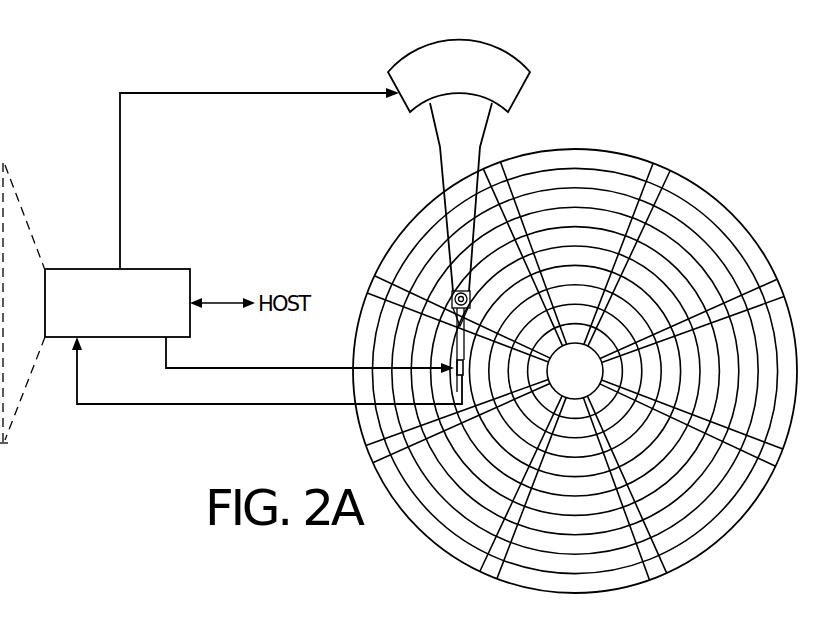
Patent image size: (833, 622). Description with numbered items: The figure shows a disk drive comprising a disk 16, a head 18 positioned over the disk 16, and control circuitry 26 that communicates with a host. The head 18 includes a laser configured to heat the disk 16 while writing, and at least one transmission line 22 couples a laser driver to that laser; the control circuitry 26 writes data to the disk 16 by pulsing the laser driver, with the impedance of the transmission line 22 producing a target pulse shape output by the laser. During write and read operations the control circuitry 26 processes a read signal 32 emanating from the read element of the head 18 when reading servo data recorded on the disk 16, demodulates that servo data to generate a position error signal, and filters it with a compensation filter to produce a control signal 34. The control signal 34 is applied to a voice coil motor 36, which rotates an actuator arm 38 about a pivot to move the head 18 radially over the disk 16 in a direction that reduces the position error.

The disk 16 is at (732, 192).
The head 18 is at (473, 371).
The transmission line 22 is at (288, 366).
The control circuitry 26 is at (158, 268).
The read signal 32 is at (196, 406).
The control signal 34 is at (121, 161).
The voice coil motor 36 is at (407, 108).
The actuator arm 38 is at (442, 183).